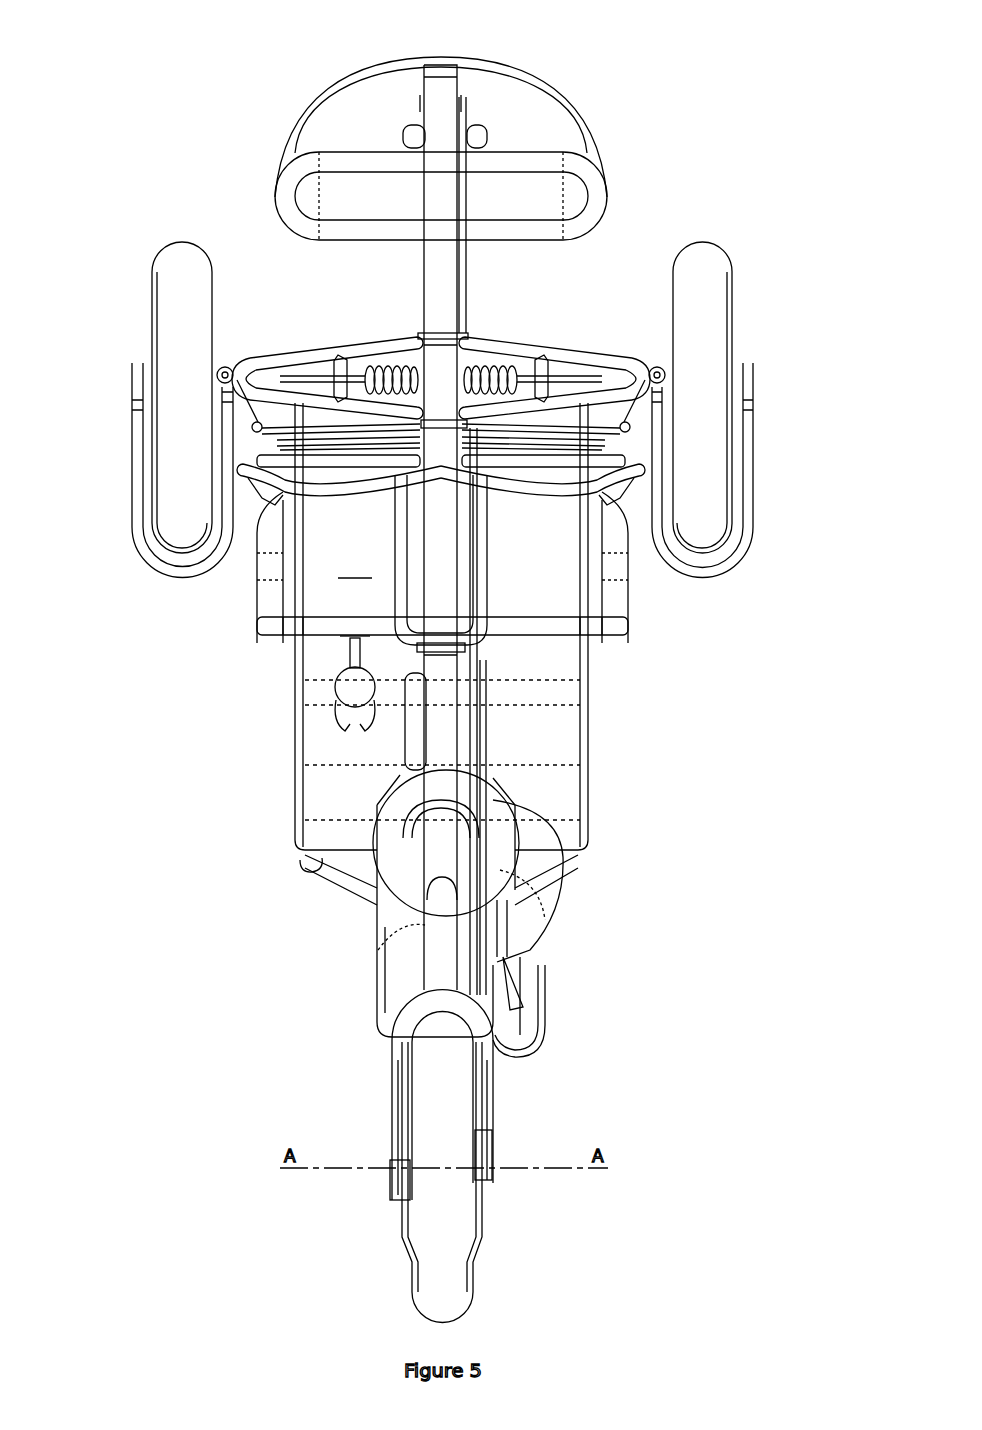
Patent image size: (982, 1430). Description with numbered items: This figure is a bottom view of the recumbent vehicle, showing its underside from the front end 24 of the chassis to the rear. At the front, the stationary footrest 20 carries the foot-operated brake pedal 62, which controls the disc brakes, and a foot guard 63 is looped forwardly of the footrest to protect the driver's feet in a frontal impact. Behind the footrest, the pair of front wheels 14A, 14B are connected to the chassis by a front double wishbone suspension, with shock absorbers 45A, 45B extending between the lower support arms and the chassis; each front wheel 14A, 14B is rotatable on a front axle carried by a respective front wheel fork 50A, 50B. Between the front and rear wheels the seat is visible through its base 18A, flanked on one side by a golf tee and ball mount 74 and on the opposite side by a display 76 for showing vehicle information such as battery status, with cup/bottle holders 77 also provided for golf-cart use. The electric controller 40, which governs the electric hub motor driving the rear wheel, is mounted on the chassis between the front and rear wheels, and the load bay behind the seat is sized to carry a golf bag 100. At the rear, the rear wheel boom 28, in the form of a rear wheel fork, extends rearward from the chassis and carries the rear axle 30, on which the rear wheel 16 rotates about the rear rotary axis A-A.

The foot guard 63 is at (373, 75).
The front end 24 is at (450, 77).
The foot-operated brake pedal 62 is at (478, 135).
The stationary footrest 20 is at (604, 198).
The front wheel 14B is at (175, 292).
The front wheel 14A is at (720, 278).
The shock absorber 45B is at (395, 370).
The shock absorber 45A is at (490, 375).
The display 76 is at (610, 452).
The front wheel fork 50A is at (750, 470).
The front wheel fork 50B is at (135, 485).
The golf tee and ball mount 74 is at (270, 455).
The base 18A is at (442, 720).
The cup/bottle holders 77 is at (340, 690).
The electric controller 40 is at (465, 707).
The golf bag 100 is at (555, 905).
The rear wheel boom 28 is at (485, 1097).
The rear axle 30 is at (405, 1168).
The rear wheel 16 is at (458, 1305).